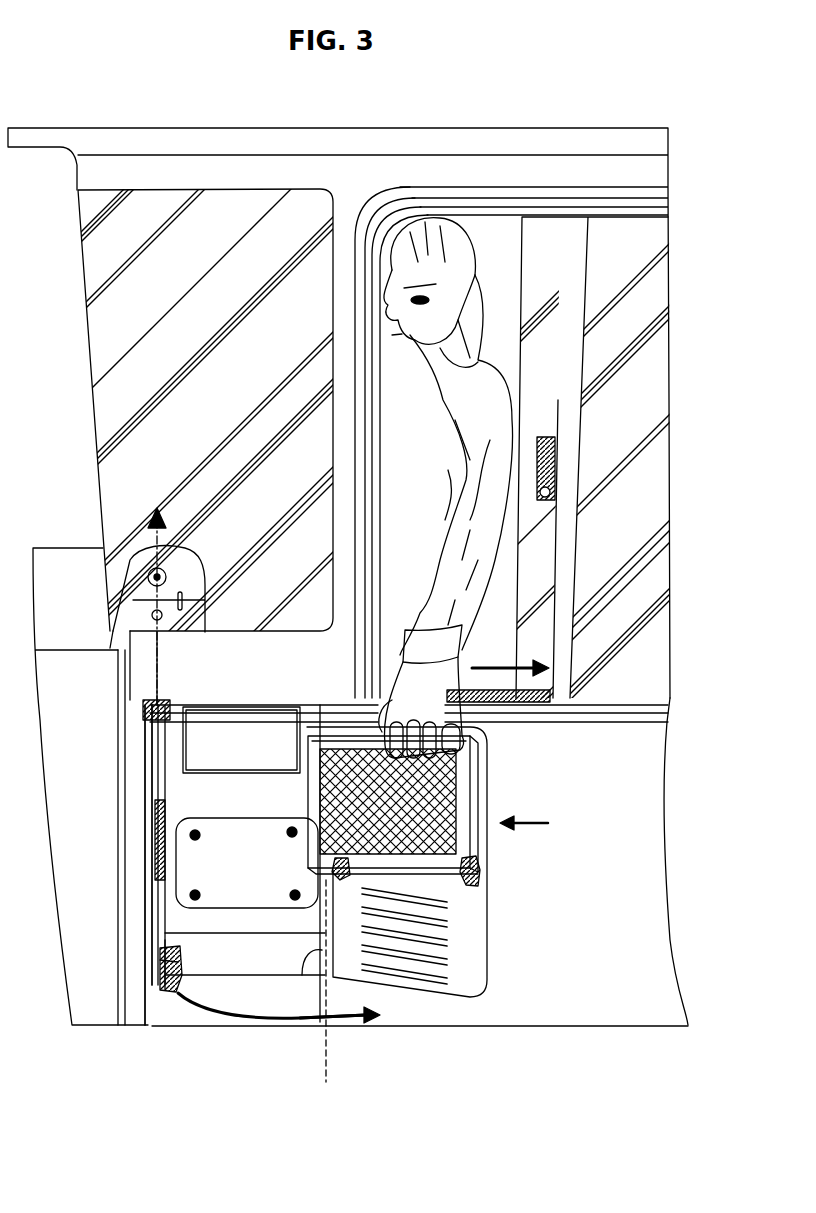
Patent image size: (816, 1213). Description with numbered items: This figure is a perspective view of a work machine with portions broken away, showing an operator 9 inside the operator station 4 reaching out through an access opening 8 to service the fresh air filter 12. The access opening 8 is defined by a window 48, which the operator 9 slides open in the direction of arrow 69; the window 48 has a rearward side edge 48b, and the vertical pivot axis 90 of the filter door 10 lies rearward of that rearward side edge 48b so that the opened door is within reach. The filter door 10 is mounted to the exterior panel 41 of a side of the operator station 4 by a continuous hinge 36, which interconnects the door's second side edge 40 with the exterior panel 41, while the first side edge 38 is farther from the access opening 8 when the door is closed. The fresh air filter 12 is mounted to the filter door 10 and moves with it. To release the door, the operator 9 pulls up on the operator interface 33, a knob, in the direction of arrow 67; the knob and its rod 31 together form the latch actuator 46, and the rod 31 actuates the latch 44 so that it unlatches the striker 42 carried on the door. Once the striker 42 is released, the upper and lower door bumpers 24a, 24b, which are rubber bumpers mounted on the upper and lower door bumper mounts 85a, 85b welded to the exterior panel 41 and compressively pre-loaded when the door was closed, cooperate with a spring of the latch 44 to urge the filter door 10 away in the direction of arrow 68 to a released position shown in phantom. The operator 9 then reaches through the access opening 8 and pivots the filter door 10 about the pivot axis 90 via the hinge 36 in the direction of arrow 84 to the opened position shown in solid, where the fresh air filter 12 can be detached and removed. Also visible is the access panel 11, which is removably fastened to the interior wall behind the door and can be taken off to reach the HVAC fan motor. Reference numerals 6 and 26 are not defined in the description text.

The operator station 4 is at (415, 1033).
The recessed panel 6 is at (200, 774).
The access opening 8 is at (520, 722).
The operator 9 is at (478, 252).
The filter door 10 is at (539, 824).
The access panel 11 is at (247, 863).
The fresh air filter 12 is at (340, 740).
The upper door bumper 24a is at (150, 715).
The lower door bumper 24b is at (165, 962).
The filter retaining clip 26 is at (350, 858).
The rod 31 is at (150, 734).
The operator interface 33 is at (185, 550).
The hinge 36 is at (305, 972).
The first side edge 38 is at (488, 960).
The second side edge 40 is at (333, 1009).
The exterior panel 41 is at (645, 758).
The striker 42 is at (480, 870).
The latch 44 is at (140, 886).
The latch actuator 46 is at (152, 780).
The window 48 is at (548, 247).
The rearward side edge 48b is at (355, 400).
The arrow 67 is at (153, 518).
The arrow 68 is at (165, 980).
The arrow 69 is at (492, 665).
The arrow 84 is at (285, 1026).
The upper door bumper mount 85a is at (152, 705).
The lower door bumper mount 85b is at (152, 942).
The pivot axis 90 is at (330, 1052).